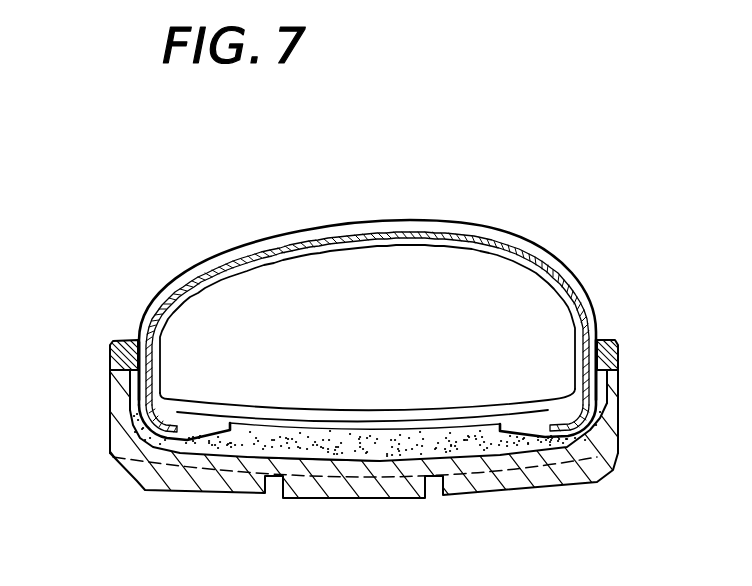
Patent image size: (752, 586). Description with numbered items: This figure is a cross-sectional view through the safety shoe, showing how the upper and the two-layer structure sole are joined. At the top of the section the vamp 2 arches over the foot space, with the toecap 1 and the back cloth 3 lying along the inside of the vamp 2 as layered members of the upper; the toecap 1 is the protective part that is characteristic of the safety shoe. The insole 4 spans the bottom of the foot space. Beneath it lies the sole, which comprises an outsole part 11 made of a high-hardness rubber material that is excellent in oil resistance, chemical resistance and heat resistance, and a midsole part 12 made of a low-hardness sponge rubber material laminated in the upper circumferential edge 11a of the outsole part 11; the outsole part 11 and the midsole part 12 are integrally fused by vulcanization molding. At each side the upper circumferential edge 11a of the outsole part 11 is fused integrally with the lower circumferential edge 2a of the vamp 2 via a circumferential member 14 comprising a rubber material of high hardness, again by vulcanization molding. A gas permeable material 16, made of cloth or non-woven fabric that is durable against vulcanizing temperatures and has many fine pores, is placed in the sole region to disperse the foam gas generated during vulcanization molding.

The toecap 1 is at (458, 234).
The vamp 2 is at (548, 238).
The lower circumferential edge of the vamp 2a is at (139, 357).
The back cloth 3 is at (413, 246).
The insole 4 is at (431, 410).
The outsole part 11 is at (513, 484).
The upper circumferential edge of the outsole part 11a is at (120, 382).
The midsole part 12 is at (278, 450).
The circumferential member 14 is at (126, 345).
The gas permeable material 16 is at (338, 428).